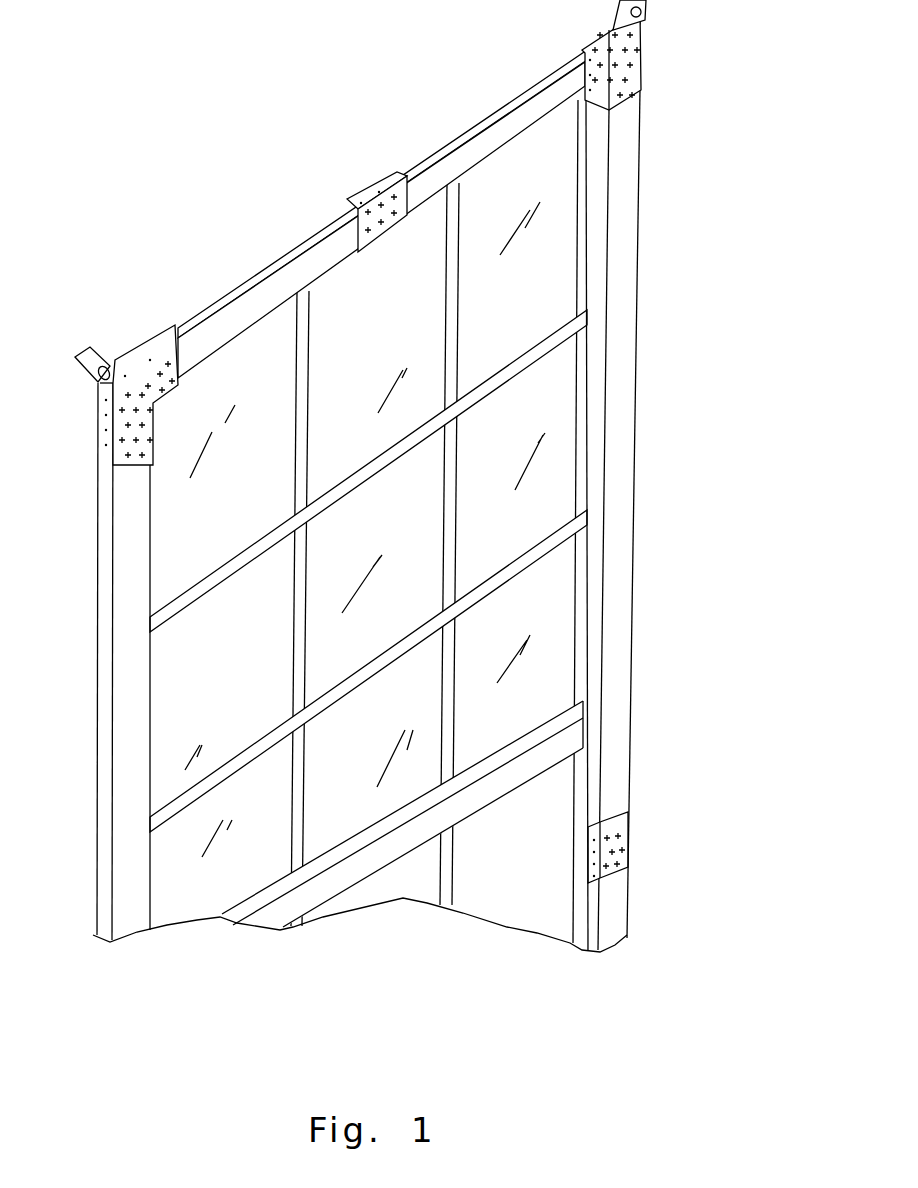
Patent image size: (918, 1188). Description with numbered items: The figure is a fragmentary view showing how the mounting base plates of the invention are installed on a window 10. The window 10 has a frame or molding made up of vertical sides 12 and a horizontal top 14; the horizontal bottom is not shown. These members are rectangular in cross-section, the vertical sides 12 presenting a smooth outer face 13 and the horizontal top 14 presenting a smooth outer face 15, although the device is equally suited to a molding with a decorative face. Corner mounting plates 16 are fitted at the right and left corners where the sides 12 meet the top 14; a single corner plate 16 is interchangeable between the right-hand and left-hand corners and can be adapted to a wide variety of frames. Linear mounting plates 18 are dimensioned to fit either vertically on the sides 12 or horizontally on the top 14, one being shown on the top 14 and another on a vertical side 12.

The window 10 is at (704, 397).
The vertical side 12 is at (642, 648).
The smooth outer face 13 is at (621, 527).
The horizontal top 14 is at (256, 262).
The smooth outer face 15 is at (222, 313).
The corner mounting plate 16 is at (104, 434).
The linear mounting plate 18 is at (383, 177).